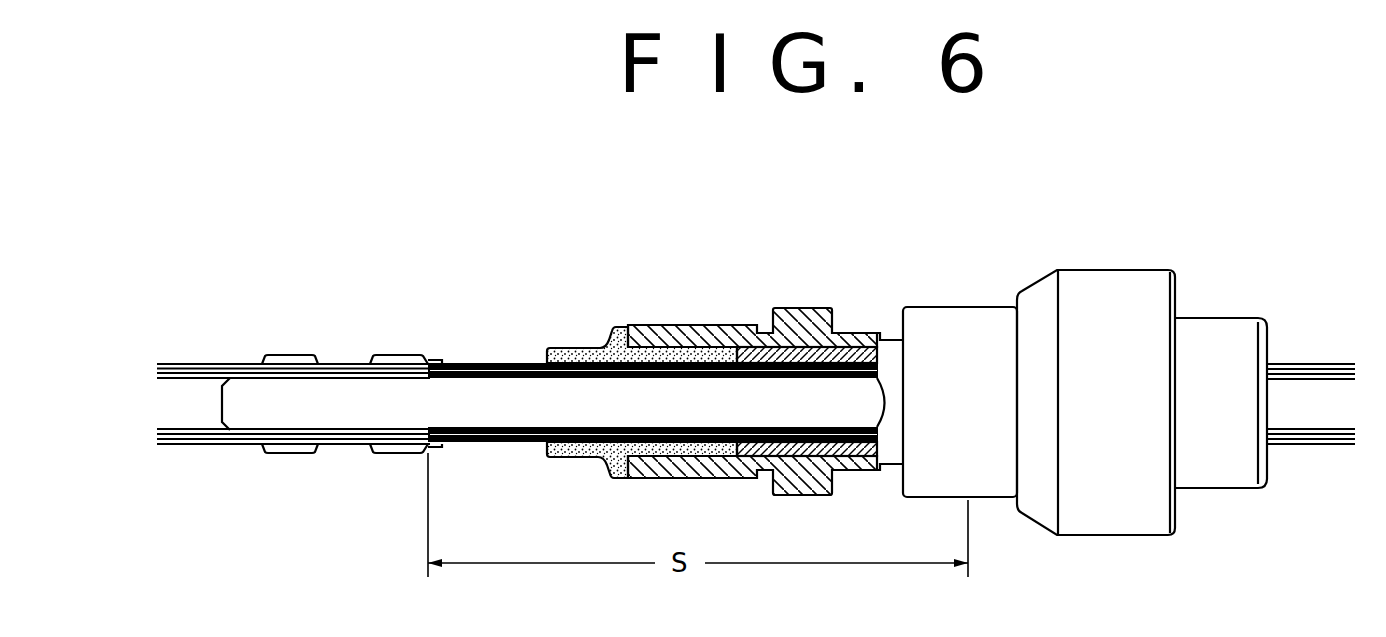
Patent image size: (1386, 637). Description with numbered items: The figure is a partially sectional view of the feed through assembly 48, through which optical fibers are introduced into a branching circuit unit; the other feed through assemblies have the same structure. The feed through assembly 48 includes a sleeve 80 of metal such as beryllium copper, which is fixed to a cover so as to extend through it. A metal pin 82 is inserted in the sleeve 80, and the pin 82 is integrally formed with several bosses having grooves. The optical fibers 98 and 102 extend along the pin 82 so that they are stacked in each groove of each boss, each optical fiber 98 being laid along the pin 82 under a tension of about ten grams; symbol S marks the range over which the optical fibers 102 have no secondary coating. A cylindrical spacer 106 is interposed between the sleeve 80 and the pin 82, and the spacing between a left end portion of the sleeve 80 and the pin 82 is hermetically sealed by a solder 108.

The feed through assembly 48 is at (936, 299).
The sleeve 80 is at (674, 325).
The pin 82 is at (337, 393).
The optical fibers 98 is at (200, 363).
The optical fibers having no secondary coating 102 is at (490, 363).
The cylindrical spacer 106 is at (843, 347).
The solder 108 is at (583, 458).